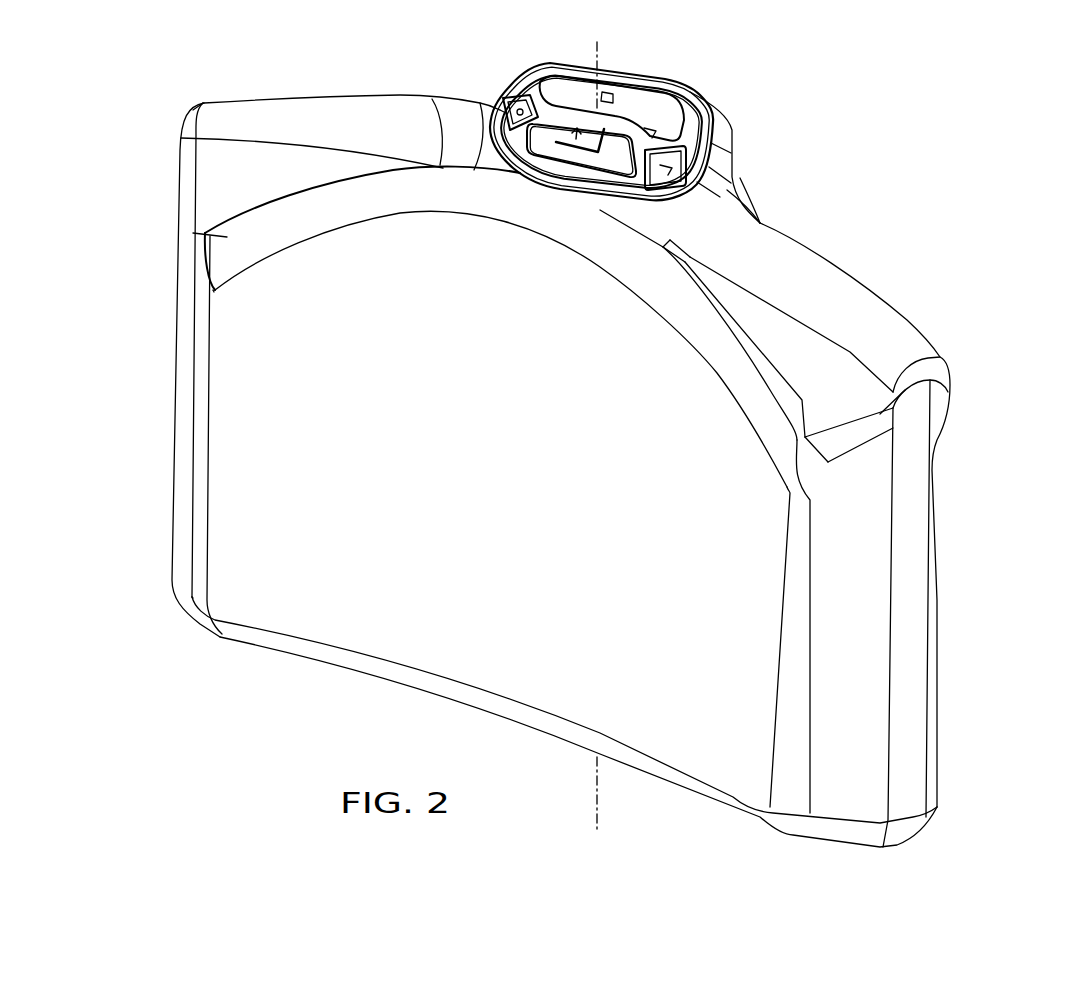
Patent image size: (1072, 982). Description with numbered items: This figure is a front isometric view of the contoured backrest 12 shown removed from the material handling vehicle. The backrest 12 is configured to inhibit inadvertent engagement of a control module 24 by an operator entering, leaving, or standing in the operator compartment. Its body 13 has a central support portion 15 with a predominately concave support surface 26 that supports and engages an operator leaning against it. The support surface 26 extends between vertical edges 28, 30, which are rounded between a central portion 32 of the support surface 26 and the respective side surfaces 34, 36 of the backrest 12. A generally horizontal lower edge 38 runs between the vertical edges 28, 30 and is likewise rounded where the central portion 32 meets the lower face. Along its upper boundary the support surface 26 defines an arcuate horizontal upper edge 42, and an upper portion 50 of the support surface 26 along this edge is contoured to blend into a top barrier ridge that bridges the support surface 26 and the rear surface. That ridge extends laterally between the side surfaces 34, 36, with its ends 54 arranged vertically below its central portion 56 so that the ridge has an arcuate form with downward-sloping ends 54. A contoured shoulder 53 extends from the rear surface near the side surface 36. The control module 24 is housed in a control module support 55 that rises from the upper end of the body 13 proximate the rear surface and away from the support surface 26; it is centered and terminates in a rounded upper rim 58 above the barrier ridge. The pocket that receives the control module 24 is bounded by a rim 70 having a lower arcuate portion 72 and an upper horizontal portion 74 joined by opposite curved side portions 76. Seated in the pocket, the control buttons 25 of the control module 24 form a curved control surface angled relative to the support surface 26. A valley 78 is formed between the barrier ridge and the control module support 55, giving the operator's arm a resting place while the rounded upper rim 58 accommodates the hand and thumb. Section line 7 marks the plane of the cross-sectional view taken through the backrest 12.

The section line 7- 7 is at (597, 42).
The backrest 12 is at (884, 163).
The body 13 is at (161, 404).
The support portion 15 is at (240, 504).
The control module 24 is at (694, 110).
The control buttons 25 is at (650, 120).
The support surface 26 is at (520, 453).
The vertical edge 28 is at (203, 340).
The vertical edge 30 is at (790, 747).
The central portion 32 is at (327, 598).
The side surface 34 is at (180, 332).
The side surface 36 is at (863, 670).
The lower edge 38 is at (410, 677).
The arcuate horizontal upper edge 42 is at (372, 224).
The upper portion 50 is at (520, 271).
The contoured shoulder 53 is at (950, 388).
The ends 54 is at (227, 270).
The control module support 55 is at (735, 130).
The central portion 56 is at (540, 224).
The rounded upper rim 58 is at (353, 178).
The rim 70 is at (688, 201).
The lower arcuate portion 72 is at (630, 208).
The upper horizontal portion 74 is at (624, 74).
The curved side portions 76 is at (495, 102).
The valley 78 is at (737, 317).